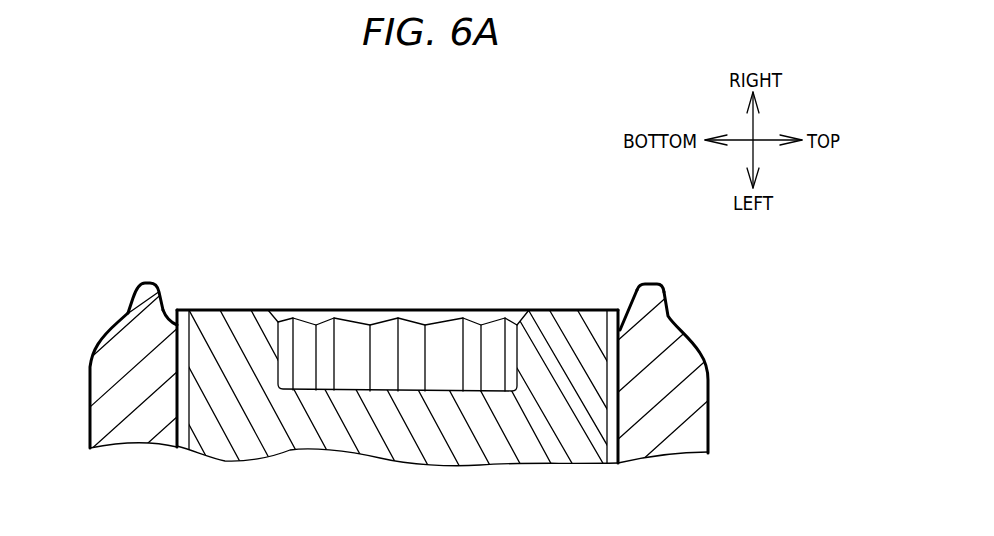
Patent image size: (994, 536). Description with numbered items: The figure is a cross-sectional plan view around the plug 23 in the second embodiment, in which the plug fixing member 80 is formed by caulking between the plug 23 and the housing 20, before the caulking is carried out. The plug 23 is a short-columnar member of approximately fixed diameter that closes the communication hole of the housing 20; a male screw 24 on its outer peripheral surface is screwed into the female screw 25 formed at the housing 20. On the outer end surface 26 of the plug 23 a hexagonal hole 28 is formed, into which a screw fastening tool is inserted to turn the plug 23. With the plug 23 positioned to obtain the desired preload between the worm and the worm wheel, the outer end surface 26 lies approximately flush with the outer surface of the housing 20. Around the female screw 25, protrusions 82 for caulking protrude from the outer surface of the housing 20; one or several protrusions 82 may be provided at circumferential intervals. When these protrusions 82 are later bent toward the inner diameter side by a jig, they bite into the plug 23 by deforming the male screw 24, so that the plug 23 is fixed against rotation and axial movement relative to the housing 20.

The housing 20 is at (95, 384).
The plug 23 is at (559, 309).
The male screw 24 is at (176, 311).
The female screw 25 is at (190, 408).
The outer end surface 26 is at (370, 358).
The hexagonal hole 28 is at (279, 351).
The plug fixing member 80 is at (368, 347).
The protrusion 82 is at (148, 285).